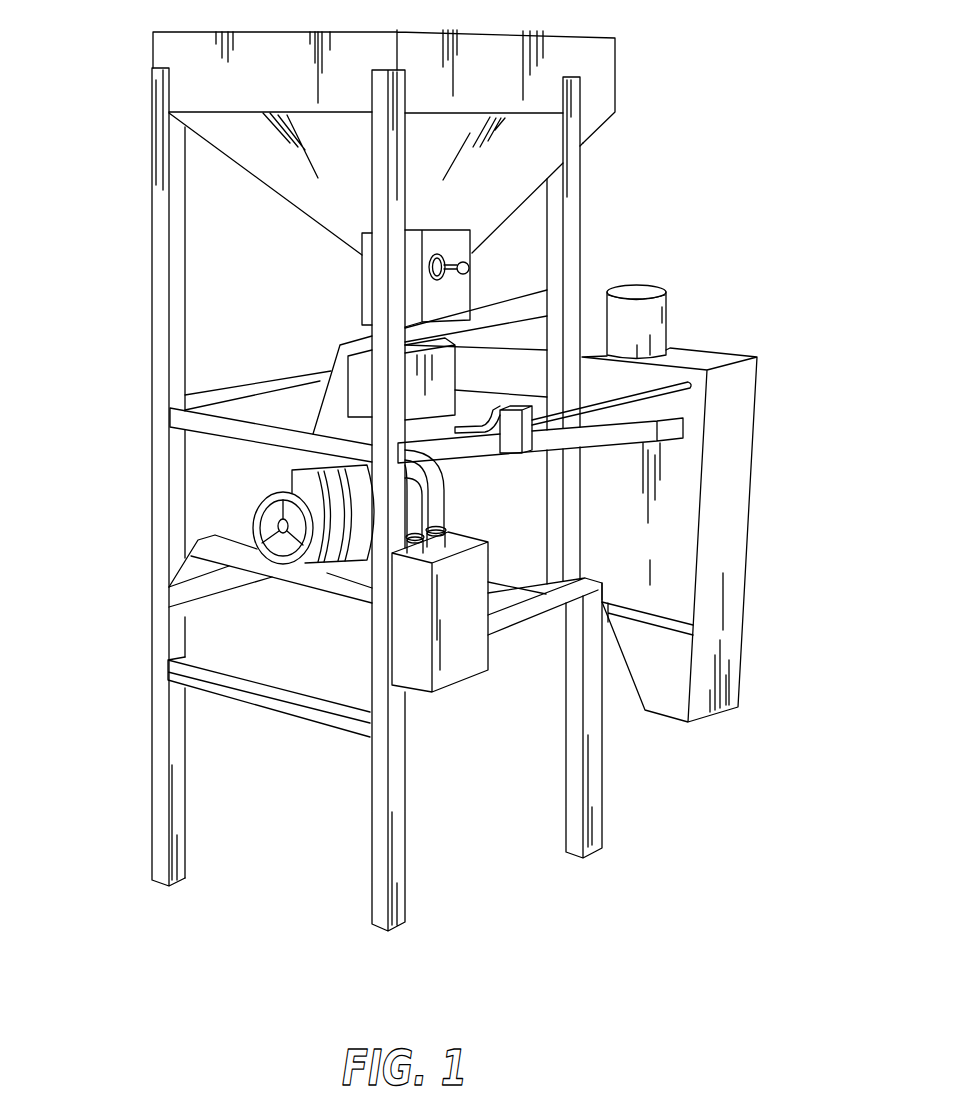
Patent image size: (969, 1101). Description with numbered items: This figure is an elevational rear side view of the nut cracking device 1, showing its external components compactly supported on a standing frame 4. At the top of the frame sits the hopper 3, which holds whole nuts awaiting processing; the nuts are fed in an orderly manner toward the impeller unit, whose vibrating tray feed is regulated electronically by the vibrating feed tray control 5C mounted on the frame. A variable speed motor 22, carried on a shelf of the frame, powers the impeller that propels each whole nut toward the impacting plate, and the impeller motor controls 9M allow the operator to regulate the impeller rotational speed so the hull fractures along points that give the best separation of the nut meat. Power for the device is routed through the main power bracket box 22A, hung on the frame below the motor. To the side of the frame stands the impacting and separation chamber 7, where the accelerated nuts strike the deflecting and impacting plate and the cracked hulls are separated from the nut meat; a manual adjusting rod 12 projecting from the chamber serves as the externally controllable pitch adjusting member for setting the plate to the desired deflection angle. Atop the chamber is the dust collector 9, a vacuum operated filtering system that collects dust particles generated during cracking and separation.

The nut cracking device 1 is at (438, 470).
The hopper 3 is at (602, 58).
The standing frame 4 is at (158, 285).
The vibrating feed tray control 5C is at (458, 292).
The impeller motor controls 9M is at (447, 378).
The dust collector 9 is at (662, 323).
The impacting and separation chamber 7 is at (732, 483).
The manual adjusting rod 12 is at (678, 392).
The motor 22 is at (277, 475).
The main power bracket box 22A is at (448, 658).